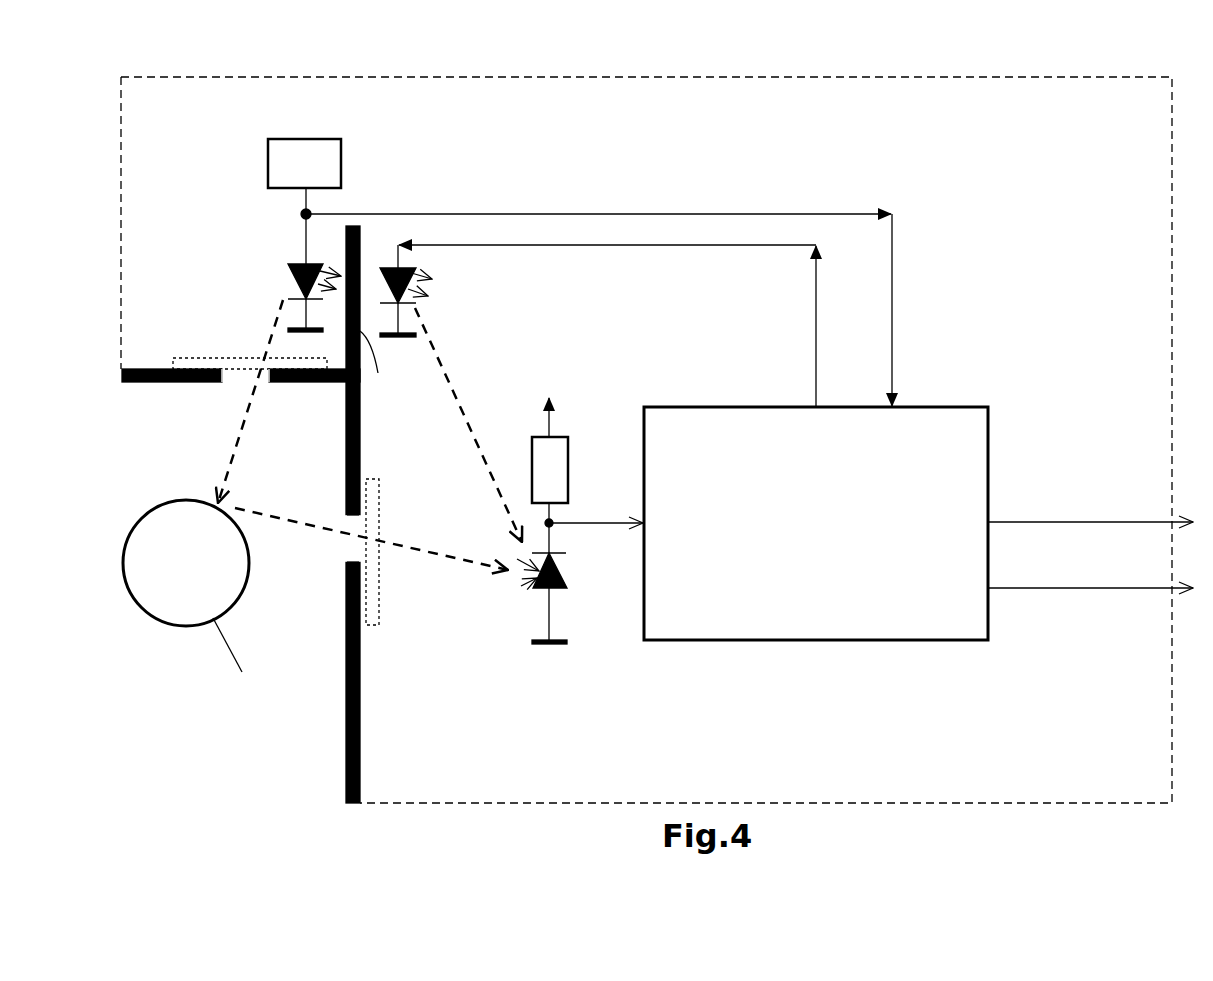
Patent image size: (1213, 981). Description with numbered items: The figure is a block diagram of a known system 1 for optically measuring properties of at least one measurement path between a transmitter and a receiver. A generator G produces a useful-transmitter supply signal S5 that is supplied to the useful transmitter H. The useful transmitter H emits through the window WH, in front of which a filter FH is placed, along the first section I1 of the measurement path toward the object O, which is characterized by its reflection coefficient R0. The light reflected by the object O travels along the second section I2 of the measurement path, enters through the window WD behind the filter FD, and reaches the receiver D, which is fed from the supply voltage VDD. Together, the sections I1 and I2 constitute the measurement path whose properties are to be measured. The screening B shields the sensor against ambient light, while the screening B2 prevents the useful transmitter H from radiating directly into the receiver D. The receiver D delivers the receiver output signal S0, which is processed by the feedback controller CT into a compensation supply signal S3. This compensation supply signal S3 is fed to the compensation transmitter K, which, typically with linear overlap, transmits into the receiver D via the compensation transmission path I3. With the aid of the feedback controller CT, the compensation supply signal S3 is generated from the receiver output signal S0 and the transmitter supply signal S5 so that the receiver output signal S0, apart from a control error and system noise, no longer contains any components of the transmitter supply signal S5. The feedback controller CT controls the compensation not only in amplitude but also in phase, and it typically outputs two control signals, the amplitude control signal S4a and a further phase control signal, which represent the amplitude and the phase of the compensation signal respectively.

The sensor device 1 is at (646, 440).
The generator G is at (304, 201).
The useful transmitter H is at (289, 298).
The compensation transmitter K is at (421, 297).
The receiver D is at (555, 598).
The object O is at (186, 563).
The screening of the sensor against ambient light B is at (253, 514).
The screening of the transmitter against direct radiation into the receiver B2 is at (386, 365).
The filter in front of the window for emission of the signal of the transmitter FH is at (249, 346).
The filter in front of the window for receiving the signal from the object FD is at (394, 552).
The window for emission of the signal of the transmitter WH is at (230, 393).
The window for reception of the signal from the object WD is at (326, 539).
The first section of the measurement path I1 is at (244, 401).
The second section of the measurement path I2 is at (371, 529).
The compensation transmission path I3 is at (468, 425).
The receiver output signal S0 is at (596, 543).
The compensation supply signal S3 is at (607, 326).
The amplitude (control) signal S4a is at (1090, 507).
The useful-transmitter supply signal S5 is at (599, 292).
The supply voltage VDD is at (551, 458).
The feedback controller CT is at (816, 523).
The reflection coefficient R0 is at (242, 661).